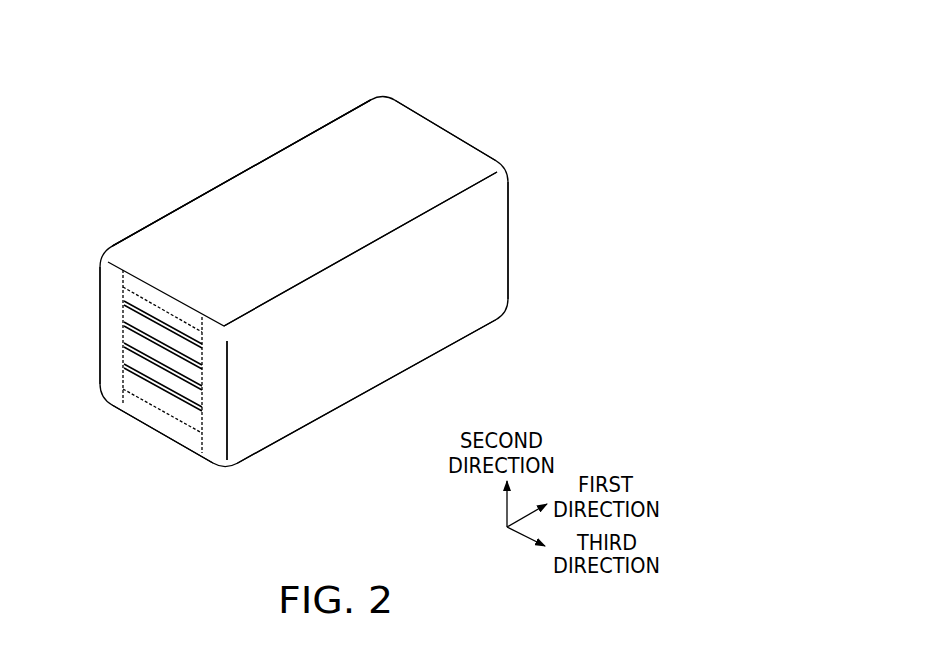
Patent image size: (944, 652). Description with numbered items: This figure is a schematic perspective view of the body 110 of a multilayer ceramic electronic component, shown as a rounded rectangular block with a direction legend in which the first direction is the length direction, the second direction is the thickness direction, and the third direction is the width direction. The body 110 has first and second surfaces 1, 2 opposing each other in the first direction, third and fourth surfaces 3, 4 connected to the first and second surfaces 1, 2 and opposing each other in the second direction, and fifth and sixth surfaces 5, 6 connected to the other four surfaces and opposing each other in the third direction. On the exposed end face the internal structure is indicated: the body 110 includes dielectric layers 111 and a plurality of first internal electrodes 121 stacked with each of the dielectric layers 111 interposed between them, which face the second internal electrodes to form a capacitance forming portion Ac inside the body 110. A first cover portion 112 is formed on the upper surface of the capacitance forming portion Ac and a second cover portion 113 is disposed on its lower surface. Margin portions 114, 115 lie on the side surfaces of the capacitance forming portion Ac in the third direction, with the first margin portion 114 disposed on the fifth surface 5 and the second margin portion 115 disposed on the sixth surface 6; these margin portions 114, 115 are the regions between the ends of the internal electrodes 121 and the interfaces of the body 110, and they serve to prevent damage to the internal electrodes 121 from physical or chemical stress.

The body 110 is at (115, 40).
The dielectric layer 111 is at (130, 358).
The first cover portion 112 is at (130, 288).
The second cover portion 113 is at (127, 410).
The first margin portion 114 is at (113, 387).
The second margin portion 115 is at (214, 447).
The first internal electrode 121 is at (125, 301).
The capacitance forming portion Ac is at (208, 403).
The first surface 1 is at (156, 433).
The second surface 2 is at (435, 124).
The third surface 3 is at (333, 158).
The fourth surface 4 is at (331, 389).
The fifth surface 5 is at (194, 199).
The sixth surface 6 is at (447, 306).